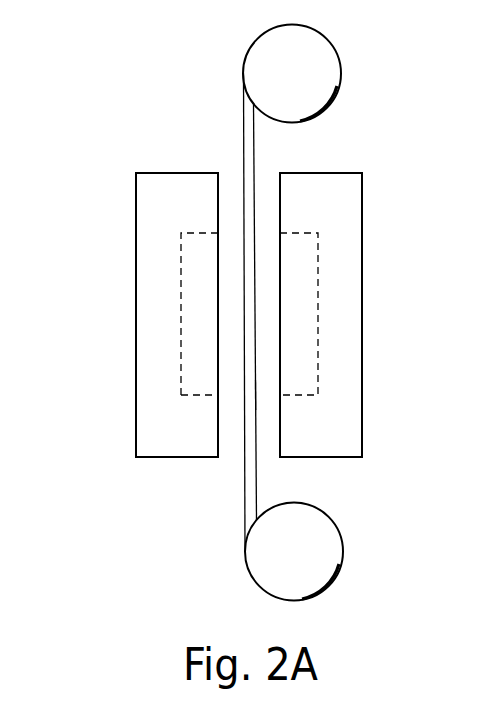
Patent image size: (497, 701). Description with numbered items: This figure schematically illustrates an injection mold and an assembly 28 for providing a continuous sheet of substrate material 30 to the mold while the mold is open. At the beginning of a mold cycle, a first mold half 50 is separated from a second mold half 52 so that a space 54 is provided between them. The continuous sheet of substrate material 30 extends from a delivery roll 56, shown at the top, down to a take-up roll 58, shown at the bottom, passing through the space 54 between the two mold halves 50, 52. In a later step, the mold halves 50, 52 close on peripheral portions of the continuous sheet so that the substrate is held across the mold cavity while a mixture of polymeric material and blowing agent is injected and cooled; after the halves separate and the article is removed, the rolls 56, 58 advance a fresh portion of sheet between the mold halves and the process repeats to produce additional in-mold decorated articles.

The belt assembly 28 is at (128, 530).
The substrate material 30 is at (243, 128).
The first mold half 50 is at (362, 331).
The second mold half 52 is at (136, 291).
The space 54 is at (265, 395).
The delivery roll 56 is at (340, 72).
The take-up roll 58 is at (249, 551).